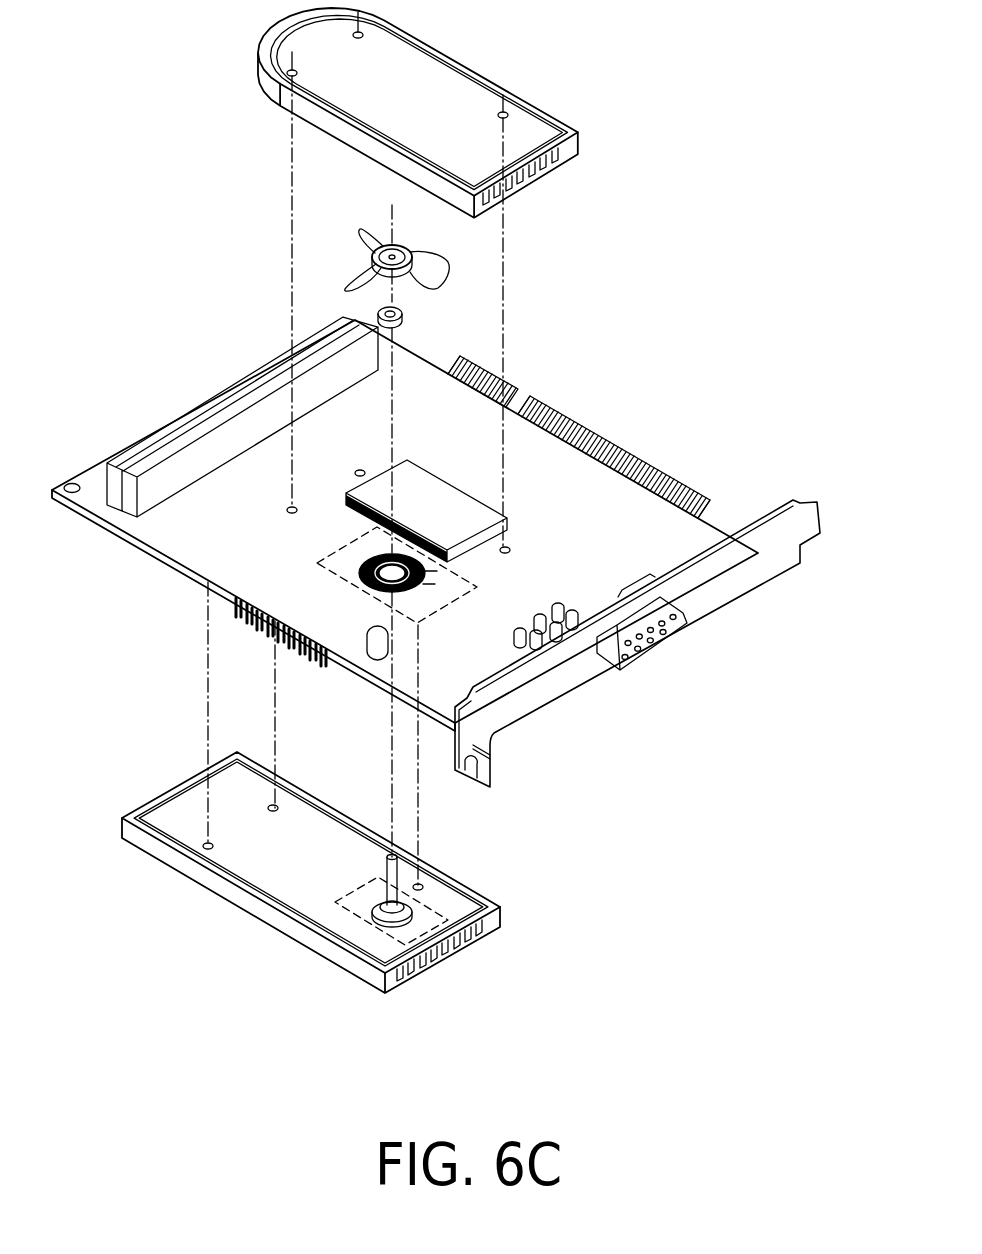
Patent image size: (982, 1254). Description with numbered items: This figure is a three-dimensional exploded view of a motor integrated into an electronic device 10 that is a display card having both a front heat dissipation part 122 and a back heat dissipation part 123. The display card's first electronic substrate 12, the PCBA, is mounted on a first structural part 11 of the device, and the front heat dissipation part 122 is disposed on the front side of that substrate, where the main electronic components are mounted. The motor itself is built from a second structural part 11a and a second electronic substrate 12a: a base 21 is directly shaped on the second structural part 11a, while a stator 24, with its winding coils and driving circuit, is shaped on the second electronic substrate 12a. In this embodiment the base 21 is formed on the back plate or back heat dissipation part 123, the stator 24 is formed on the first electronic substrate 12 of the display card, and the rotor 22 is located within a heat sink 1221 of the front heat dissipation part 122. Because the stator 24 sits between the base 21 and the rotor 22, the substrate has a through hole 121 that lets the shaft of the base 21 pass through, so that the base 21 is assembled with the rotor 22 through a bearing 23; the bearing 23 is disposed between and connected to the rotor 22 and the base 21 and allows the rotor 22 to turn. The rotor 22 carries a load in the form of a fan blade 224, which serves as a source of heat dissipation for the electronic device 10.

The electronic device 10 is at (740, 129).
The first structural part 11 is at (311, 897).
The second structural part 11a is at (400, 928).
The first electronic substrate 12 is at (436, 552).
The second electronic substrate 12a is at (428, 600).
The through hole 121 is at (393, 560).
The front heat dissipation part 122 is at (418, 125).
The heat sink 1221 is at (537, 187).
The back heat dissipation part 123 is at (320, 828).
The base 21 is at (364, 928).
The rotor 22 is at (376, 252).
The fan blade 224 is at (425, 270).
The bearing 23 is at (402, 318).
The stator 24 is at (352, 584).